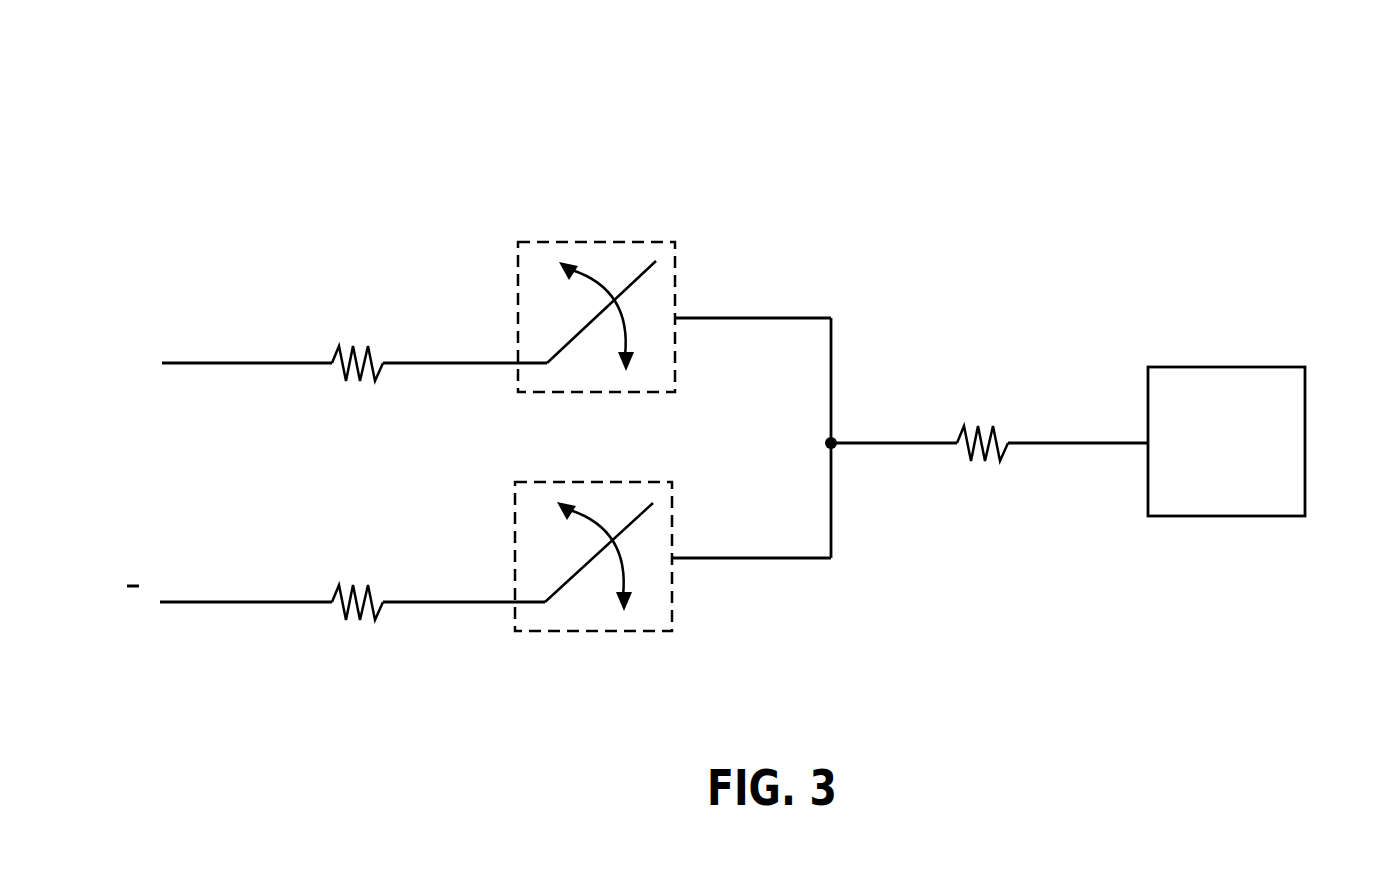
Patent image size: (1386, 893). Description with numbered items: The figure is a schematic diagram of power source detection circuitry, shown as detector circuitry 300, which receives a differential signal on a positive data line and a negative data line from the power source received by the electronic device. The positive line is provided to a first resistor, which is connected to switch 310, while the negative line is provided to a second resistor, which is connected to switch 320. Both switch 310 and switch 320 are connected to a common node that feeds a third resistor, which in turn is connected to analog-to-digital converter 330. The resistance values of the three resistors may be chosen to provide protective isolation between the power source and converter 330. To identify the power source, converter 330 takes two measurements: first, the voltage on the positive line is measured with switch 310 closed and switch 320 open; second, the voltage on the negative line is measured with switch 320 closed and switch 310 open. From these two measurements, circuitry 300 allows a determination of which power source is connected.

The detector circuitry 300 is at (780, 68).
The switch 310 is at (640, 242).
The switch 320 is at (637, 482).
The analog-to-digital converter 330 is at (1270, 367).